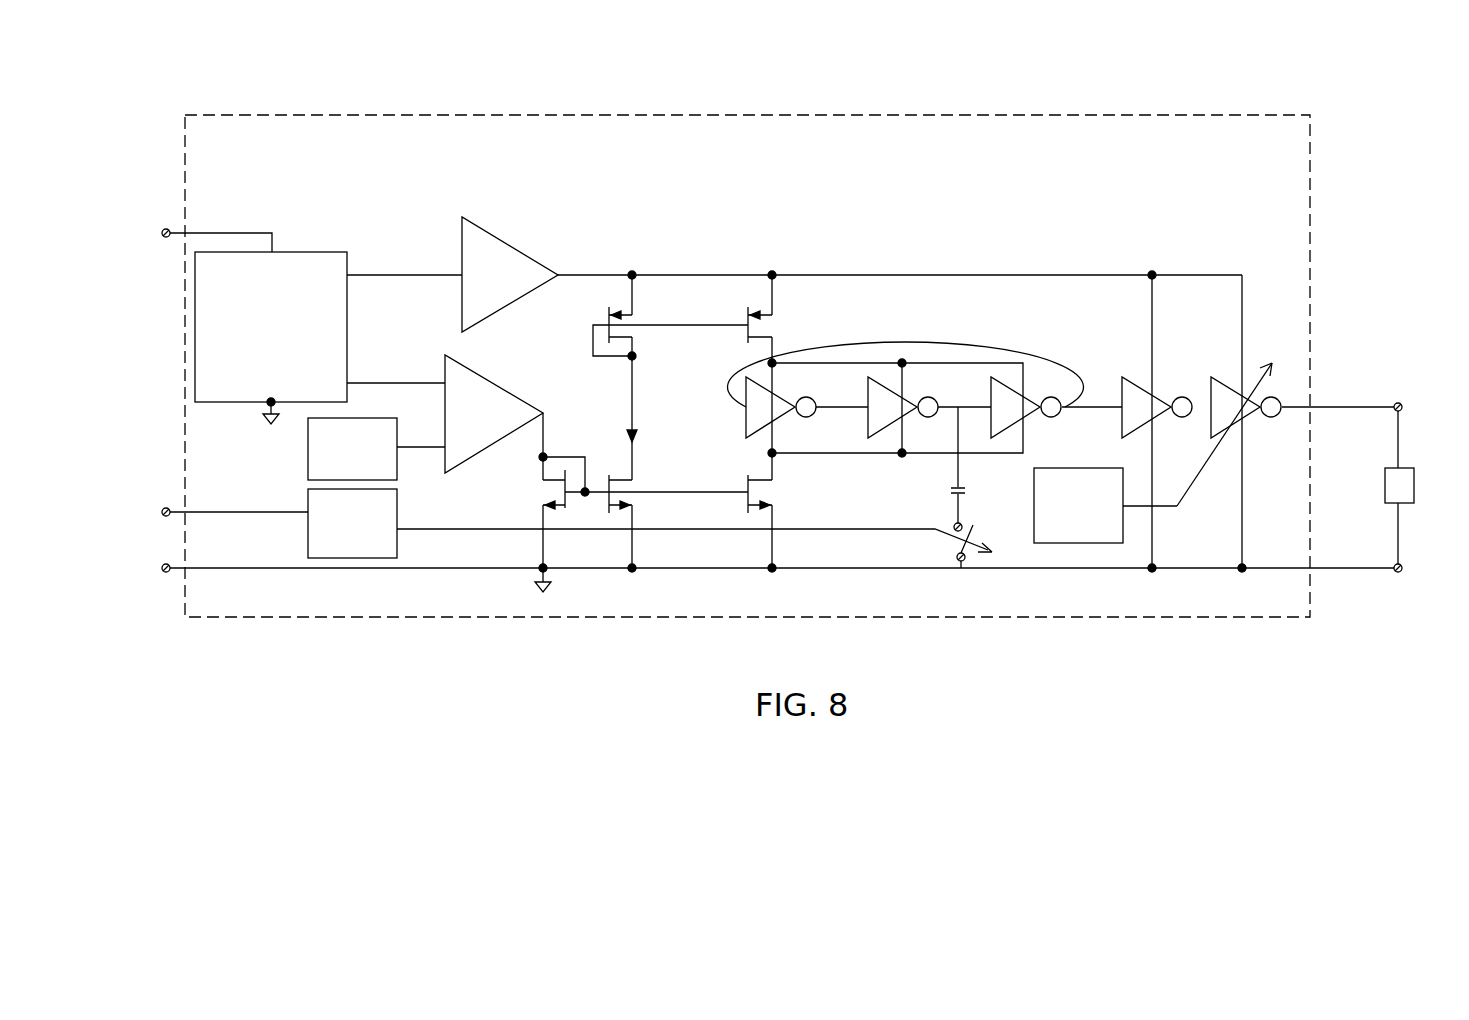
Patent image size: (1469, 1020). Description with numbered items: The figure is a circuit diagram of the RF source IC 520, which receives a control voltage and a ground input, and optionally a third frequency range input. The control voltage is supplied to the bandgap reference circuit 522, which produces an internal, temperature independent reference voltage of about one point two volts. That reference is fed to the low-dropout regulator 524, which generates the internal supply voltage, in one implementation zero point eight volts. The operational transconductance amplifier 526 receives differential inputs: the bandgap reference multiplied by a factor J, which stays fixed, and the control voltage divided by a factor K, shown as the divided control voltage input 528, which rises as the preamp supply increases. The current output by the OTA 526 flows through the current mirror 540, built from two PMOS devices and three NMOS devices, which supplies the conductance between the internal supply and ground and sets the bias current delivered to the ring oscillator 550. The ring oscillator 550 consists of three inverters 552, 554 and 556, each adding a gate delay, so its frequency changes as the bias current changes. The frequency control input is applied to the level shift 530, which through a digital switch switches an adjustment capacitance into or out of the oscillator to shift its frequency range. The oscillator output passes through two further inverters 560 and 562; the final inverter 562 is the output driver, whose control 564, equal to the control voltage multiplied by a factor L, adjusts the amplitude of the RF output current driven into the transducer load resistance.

The RF source IC 520 is at (796, 64).
The bandgap reference circuit 522 is at (309, 250).
The low-dropout (LDO) regulator 524 is at (512, 246).
The operational transconductance amplifier (OTA) 526 is at (496, 382).
The Vcntl/K input 528 is at (308, 447).
The level shift 530 is at (308, 532).
The current mirror 540 is at (660, 433).
The ring oscillator 550 is at (925, 368).
The inverter 552 is at (774, 394).
The inverter 554 is at (898, 394).
The inverter 556 is at (1022, 394).
The inverter 560 is at (1120, 422).
The output driver inverter 562 is at (1248, 414).
The output driver control 564 is at (1070, 544).